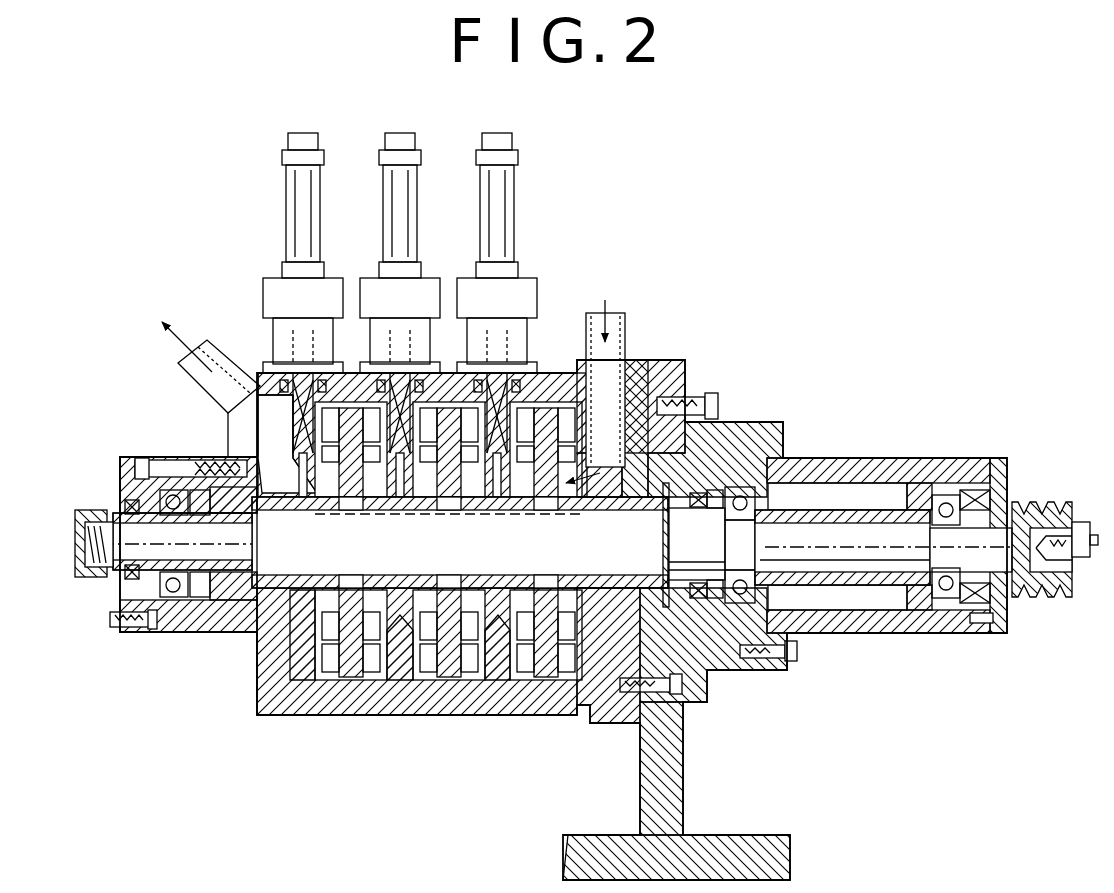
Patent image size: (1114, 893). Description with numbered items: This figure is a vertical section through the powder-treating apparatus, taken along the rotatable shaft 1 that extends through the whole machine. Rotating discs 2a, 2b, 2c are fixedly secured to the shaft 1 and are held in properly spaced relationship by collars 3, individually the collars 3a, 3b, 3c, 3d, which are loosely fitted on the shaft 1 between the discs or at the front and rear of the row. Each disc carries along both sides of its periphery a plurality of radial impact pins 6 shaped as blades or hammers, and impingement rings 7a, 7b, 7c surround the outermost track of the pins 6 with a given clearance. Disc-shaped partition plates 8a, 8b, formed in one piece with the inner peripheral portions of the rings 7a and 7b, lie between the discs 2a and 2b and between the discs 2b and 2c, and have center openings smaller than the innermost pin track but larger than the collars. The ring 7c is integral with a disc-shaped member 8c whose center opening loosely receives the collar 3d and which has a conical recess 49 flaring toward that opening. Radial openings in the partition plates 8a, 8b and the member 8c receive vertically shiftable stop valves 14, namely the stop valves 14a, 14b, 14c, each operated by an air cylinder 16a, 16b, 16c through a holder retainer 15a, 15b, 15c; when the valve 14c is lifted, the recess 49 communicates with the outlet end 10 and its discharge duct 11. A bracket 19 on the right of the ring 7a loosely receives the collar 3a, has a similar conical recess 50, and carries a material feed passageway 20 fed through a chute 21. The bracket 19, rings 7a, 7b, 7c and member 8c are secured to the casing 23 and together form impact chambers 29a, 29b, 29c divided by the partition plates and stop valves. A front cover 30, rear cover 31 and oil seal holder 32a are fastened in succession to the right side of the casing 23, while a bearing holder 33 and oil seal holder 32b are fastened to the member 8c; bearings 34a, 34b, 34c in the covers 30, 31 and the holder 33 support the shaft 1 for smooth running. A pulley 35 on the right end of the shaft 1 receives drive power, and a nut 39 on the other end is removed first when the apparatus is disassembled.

The rotatable shaft 1 is at (846, 557).
The rotating disc 2a is at (562, 715).
The rotating disc 2b is at (457, 715).
The rotating disc 2c is at (345, 715).
The collars 3 is at (460, 553).
The collar 3a is at (612, 500).
The collar 3b is at (502, 500).
The collar 3c is at (399, 500).
The collar 3d is at (283, 500).
The impact pins 6 is at (327, 715).
The impingement ring 7a is at (525, 715).
The impingement ring 7b is at (430, 715).
The impingement ring 7c is at (332, 715).
The partition plate 8a is at (491, 715).
The partition plate 8b is at (400, 715).
The disc-shaped member 8c is at (292, 715).
The outlet end 10 is at (263, 431).
The discharge duct 11 is at (207, 383).
The stop valves 14 is at (255, 372).
The stop valve 14a is at (497, 298).
The stop valve 14b is at (400, 298).
The stop valve 14c is at (303, 298).
The holder retainer 15a is at (518, 330).
The holder retainer 15b is at (376, 335).
The holder retainer 15c is at (275, 335).
The air cylinder 16a is at (515, 178).
The air cylinder 16b is at (418, 178).
The air cylinder 16c is at (321, 178).
The bracket 19 is at (605, 612).
The material feed passageway 20 is at (612, 372).
The chute 21 is at (628, 330).
The casing 23 is at (684, 764).
The impact chamber 29a is at (532, 600).
The impact chamber 29b is at (432, 600).
The impact chamber 29c is at (330, 600).
The front cover 30 is at (745, 440).
The rear cover 31 is at (880, 465).
The oil seal holder 32a is at (998, 458).
The oil seal holder 32b is at (123, 630).
The bearing holder 33 is at (210, 622).
The bearing 34a is at (940, 600).
The bearing 34b is at (728, 605).
The bearing 34c is at (178, 600).
The pulley 35 is at (1045, 500).
The nut 39 is at (90, 512).
The conical recess 49 is at (285, 600).
The conical recess 50 is at (618, 640).